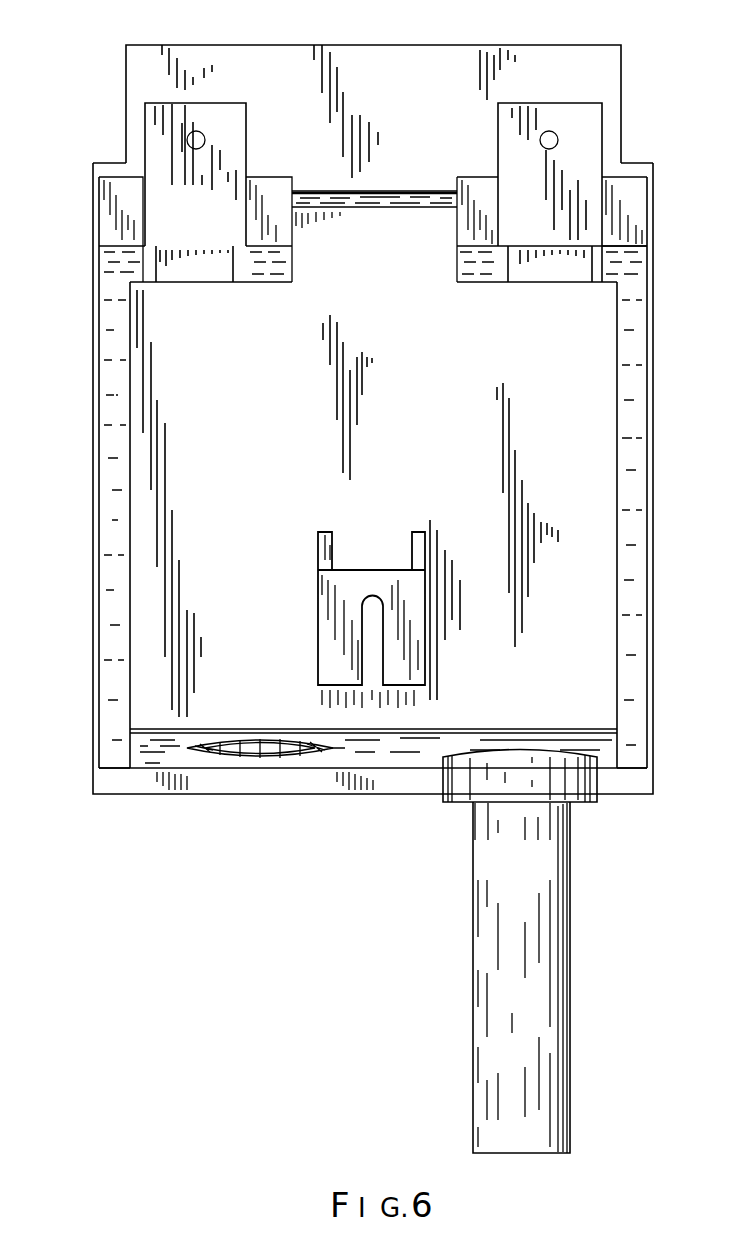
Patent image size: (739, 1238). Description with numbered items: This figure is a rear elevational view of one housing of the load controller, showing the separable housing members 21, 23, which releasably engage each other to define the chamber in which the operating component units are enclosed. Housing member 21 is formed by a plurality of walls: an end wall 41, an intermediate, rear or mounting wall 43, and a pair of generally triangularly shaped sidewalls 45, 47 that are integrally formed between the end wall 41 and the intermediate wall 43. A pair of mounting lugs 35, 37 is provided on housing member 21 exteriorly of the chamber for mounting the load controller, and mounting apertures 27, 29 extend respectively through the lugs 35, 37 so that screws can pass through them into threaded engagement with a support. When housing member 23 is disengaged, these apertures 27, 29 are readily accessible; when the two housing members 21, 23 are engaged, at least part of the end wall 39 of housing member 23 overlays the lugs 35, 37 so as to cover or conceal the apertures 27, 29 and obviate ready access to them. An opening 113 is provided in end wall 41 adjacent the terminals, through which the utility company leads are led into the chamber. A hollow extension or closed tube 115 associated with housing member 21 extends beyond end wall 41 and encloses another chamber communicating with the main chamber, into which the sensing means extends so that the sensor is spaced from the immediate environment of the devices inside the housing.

The housing member 21 is at (92, 381).
The housing member 23 is at (124, 70).
The mounting aperture 27 is at (550, 131).
The mounting aperture 29 is at (195, 131).
The mounting lug 35 is at (498, 140).
The mounting lug 37 is at (247, 145).
The end wall 39 is at (392, 96).
The end wall 41 is at (328, 797).
The intermediate wall 43 is at (412, 420).
The sidewall 45 is at (648, 441).
The sidewall 47 is at (98, 411).
The opening 113 is at (220, 757).
The closed tube 115 is at (568, 917).